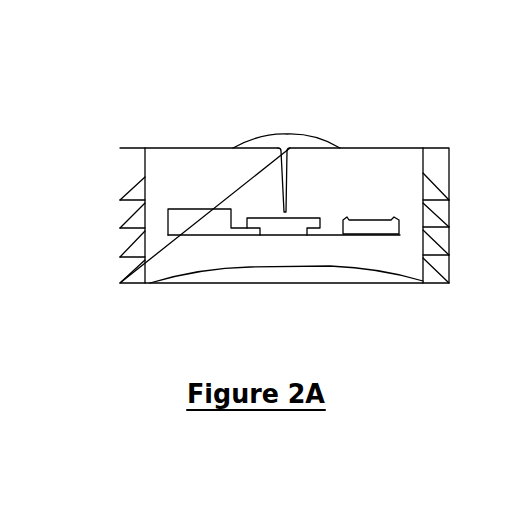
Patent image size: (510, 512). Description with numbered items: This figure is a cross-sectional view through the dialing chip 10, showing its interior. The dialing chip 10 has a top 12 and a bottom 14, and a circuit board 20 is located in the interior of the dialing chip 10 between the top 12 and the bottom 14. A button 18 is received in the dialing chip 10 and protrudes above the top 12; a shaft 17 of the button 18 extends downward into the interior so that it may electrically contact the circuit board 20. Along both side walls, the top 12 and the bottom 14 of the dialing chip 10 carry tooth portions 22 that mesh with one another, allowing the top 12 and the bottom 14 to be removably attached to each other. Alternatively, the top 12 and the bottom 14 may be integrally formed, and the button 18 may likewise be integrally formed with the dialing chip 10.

The dialing chip 10 is at (72, 65).
The top 12 is at (377, 148).
The bottom 14 is at (335, 284).
The shaft 17 is at (283, 159).
The button 18 is at (296, 138).
The circuit board 20 is at (353, 237).
The tooth portions 22 is at (122, 197).